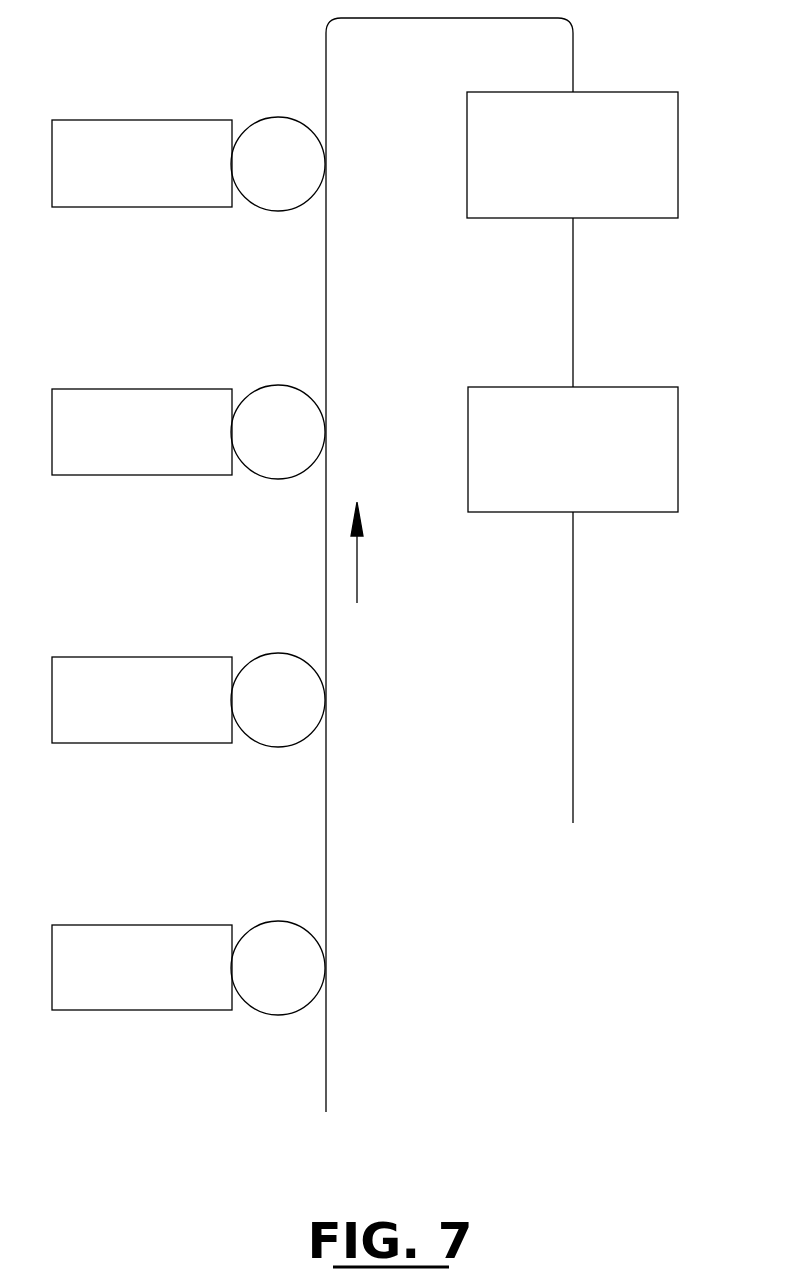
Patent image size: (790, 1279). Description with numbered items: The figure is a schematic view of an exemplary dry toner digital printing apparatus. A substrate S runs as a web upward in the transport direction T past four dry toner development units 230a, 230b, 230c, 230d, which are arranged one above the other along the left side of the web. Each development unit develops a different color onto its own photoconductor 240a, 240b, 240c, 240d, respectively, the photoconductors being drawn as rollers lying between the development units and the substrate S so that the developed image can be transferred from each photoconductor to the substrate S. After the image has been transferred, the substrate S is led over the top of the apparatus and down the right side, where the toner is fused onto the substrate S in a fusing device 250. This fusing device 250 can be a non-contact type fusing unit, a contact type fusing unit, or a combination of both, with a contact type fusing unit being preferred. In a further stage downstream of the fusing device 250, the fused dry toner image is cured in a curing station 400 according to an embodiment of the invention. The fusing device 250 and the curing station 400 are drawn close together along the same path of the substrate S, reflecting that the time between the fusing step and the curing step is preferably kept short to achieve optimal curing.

The dry toner development unit 230a is at (142, 967).
The dry toner development unit 230b is at (142, 700).
The dry toner development unit 230c is at (142, 432).
The dry toner development unit 230d is at (142, 163).
The photoconductor 240a is at (282, 929).
The photoconductor 240b is at (282, 661).
The photoconductor 240c is at (282, 394).
The photoconductor 240d is at (282, 126).
The fusing device 250 is at (572, 155).
The curing station 400 is at (633, 398).
The substrate S is at (326, 1068).
The transport direction T is at (366, 546).